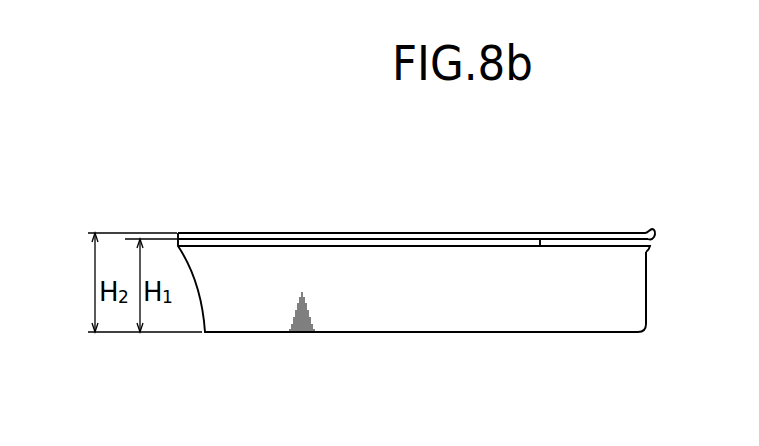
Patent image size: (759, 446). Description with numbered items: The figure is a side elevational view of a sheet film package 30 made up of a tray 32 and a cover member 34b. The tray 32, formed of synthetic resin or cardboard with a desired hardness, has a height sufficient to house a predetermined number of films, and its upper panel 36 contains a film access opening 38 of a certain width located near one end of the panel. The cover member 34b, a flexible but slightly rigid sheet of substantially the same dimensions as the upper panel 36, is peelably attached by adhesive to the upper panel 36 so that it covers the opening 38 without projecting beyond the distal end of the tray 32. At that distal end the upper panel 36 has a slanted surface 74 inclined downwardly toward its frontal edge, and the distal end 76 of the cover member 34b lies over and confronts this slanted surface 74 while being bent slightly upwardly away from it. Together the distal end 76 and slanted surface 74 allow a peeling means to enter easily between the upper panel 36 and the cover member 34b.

The sheet film package 30 is at (588, 337).
The tray 32 is at (617, 292).
The cover member 34b is at (428, 233).
The upper panel 36 is at (384, 240).
The film access opening 38 is at (542, 243).
The slanted surface 74 is at (657, 244).
The distal end 76 is at (646, 231).